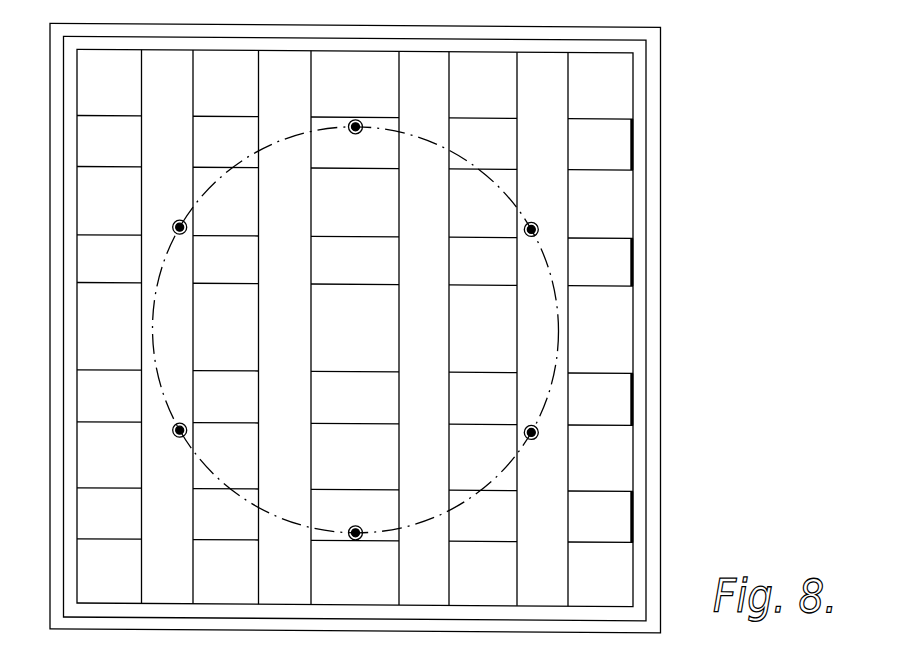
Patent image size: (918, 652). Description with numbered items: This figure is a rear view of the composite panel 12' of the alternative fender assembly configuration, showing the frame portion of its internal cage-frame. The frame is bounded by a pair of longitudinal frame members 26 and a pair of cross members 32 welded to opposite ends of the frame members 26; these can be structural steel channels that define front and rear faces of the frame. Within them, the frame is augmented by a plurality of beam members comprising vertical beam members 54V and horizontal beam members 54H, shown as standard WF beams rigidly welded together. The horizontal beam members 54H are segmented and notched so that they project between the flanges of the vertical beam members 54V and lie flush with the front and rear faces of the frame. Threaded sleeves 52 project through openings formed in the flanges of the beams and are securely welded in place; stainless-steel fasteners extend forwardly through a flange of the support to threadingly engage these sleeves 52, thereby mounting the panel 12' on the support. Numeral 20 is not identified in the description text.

The composite panel 12' is at (763, 534).
The outer frame 20 is at (661, 441).
The longitudinal frame members 26 is at (647, 316).
The cross members 32 is at (503, 50).
The threaded sleeves 52 is at (355, 118).
The horizontal beam members 54H is at (580, 166).
The vertical beam members 54V is at (258, 102).